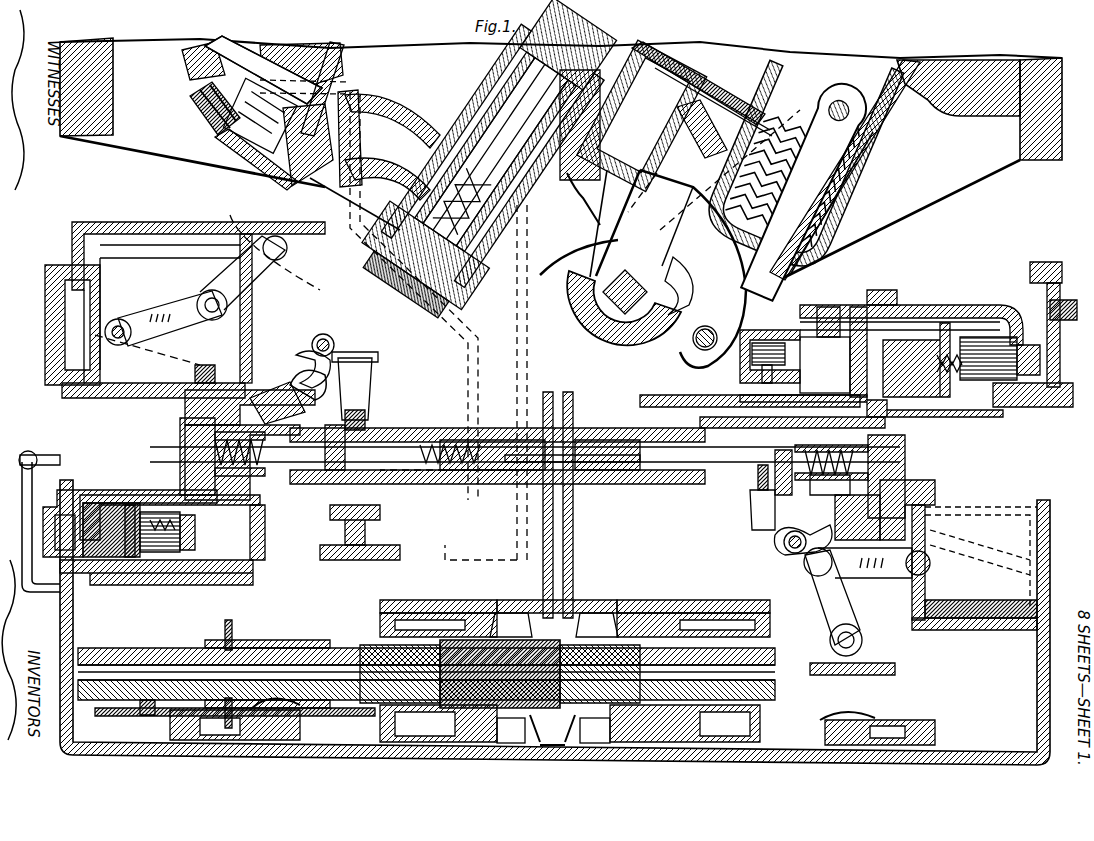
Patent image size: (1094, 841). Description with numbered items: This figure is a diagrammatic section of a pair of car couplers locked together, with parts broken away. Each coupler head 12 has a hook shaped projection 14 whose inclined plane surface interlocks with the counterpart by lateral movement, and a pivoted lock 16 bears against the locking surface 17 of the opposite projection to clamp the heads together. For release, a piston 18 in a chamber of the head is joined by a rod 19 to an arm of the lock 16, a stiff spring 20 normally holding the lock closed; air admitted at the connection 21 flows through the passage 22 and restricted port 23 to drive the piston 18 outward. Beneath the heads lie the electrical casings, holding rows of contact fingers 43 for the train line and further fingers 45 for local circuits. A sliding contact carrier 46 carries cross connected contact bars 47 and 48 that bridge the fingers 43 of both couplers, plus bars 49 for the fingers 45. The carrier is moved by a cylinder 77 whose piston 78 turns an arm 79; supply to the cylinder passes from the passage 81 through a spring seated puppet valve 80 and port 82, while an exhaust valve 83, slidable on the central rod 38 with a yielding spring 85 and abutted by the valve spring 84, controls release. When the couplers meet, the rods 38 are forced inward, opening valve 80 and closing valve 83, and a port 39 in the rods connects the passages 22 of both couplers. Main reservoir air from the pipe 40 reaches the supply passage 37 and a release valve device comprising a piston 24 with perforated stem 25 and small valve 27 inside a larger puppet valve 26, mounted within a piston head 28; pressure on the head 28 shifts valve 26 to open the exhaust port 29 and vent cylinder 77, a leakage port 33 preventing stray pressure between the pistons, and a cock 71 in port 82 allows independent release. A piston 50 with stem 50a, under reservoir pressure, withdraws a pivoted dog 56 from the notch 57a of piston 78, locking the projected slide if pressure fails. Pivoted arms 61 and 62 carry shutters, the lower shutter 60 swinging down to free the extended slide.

The coupler head 12 is at (160, 138).
The hook shaped projection 14 is at (690, 118).
The pivoted lock 16 is at (656, 269).
The locking surface 17 is at (579, 223).
The piston 18 is at (308, 46).
The rod 19 is at (793, 168).
The spring 20 is at (838, 212).
The connection 21 is at (1045, 285).
The passage 22 is at (216, 146).
The port 23 is at (198, 80).
The piston 24 is at (120, 503).
The perforated stem 25 is at (125, 570).
The puppet valve 26 is at (145, 570).
The small valve 27 is at (165, 570).
The piston head 28 is at (1065, 318).
The exhaust port 29 is at (135, 503).
The leakage port 33 is at (105, 500).
The supply passage 37 is at (280, 575).
The rod 38 is at (520, 440).
The port 39 is at (588, 440).
The main reservoir pipe 40 is at (486, 163).
The contact fingers 43 is at (492, 612).
The contact fingers 45 is at (290, 712).
The sliding contact carrier 46 is at (258, 648).
The contact bars 47 is at (228, 640).
The contact bars 48 is at (358, 648).
The contact bars 49 is at (148, 710).
The piston 50 is at (390, 530).
The stem 50a is at (372, 375).
The pivoted dog 56 is at (330, 338).
The notch 57a is at (205, 365).
The lower shutter 60 is at (552, 740).
The arms 61 is at (515, 614).
The arms 62 is at (570, 724).
The cock 71 is at (232, 390).
The cylinder 77 is at (130, 275).
The piston 78 is at (60, 270).
The arm 79 is at (225, 275).
The puppet valve 80 is at (182, 420).
The passage 81 is at (200, 462).
The port 82 is at (270, 385).
The exhaust valve 83 is at (333, 430).
The spring 84 is at (215, 452).
The spring 85 is at (425, 442).